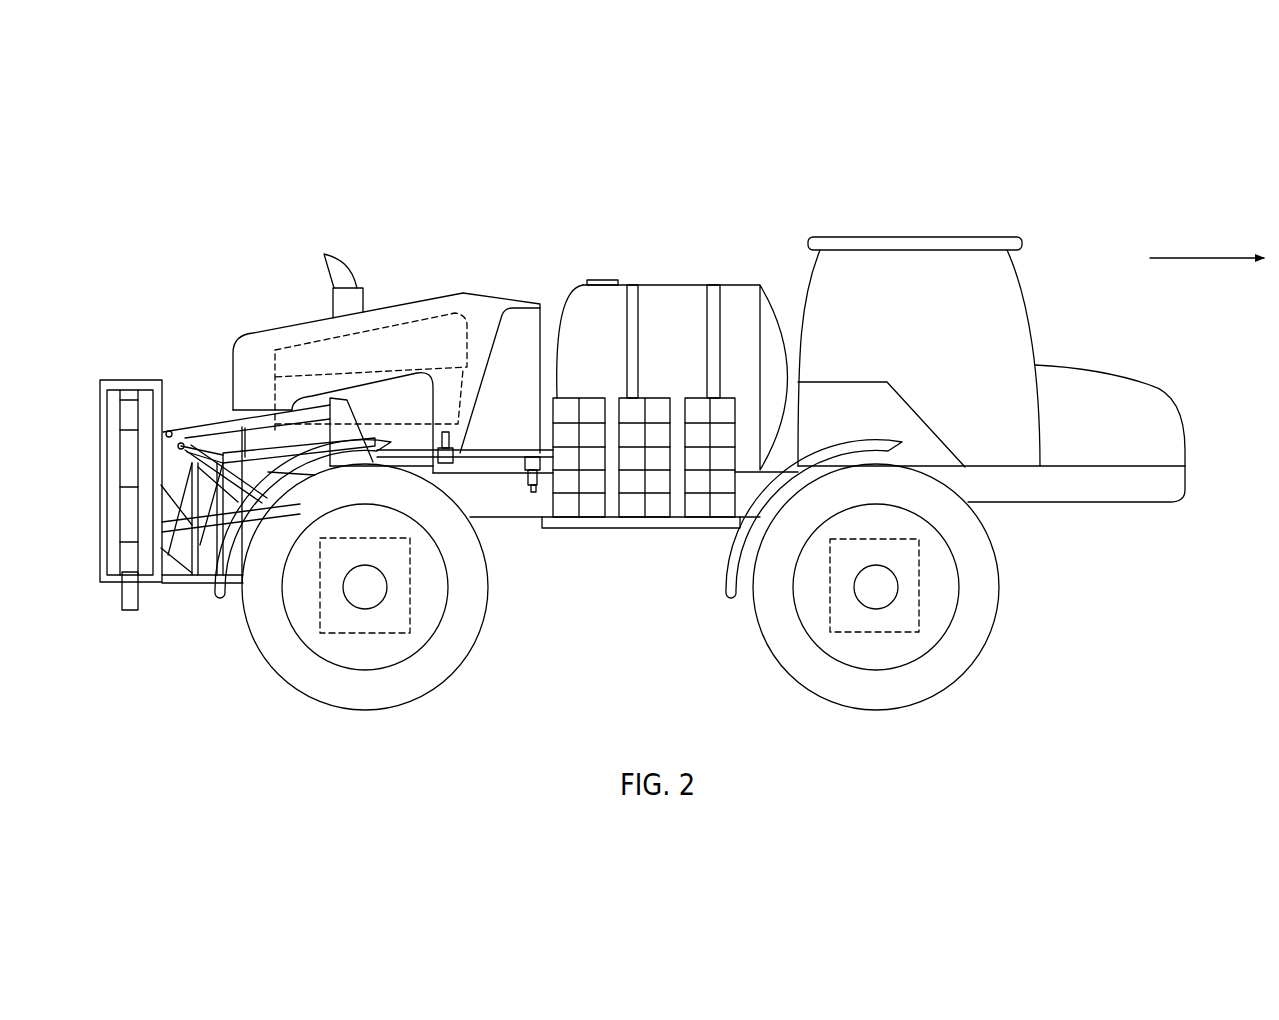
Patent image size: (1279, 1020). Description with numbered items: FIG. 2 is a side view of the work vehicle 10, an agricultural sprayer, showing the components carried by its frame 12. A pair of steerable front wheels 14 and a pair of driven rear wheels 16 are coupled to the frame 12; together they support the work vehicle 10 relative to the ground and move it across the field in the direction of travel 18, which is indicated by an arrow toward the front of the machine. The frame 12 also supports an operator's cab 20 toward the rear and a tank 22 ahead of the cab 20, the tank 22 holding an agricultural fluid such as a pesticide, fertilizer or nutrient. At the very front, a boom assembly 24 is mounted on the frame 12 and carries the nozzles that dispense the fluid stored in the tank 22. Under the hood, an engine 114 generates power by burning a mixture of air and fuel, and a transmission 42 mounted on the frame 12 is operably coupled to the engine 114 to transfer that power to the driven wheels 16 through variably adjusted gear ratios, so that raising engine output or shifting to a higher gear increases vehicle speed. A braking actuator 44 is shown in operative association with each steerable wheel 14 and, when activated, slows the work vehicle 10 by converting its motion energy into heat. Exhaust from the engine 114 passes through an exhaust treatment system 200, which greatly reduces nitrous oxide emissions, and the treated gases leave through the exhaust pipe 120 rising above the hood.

The work vehicle 10 is at (149, 203).
The frame 12 is at (1085, 505).
The front wheels 14 is at (973, 665).
The rear wheels 16 is at (277, 660).
The direction of travel 18 is at (1180, 255).
The operator's cab 20 is at (987, 232).
The tank 22 is at (668, 284).
The boom assembly 24 is at (130, 360).
The transmission 42 is at (385, 635).
The braking actuator 44 is at (895, 635).
The engine 114 is at (458, 425).
The exhaust pipe 120 is at (333, 262).
The exhaust treatment system 200 is at (413, 313).